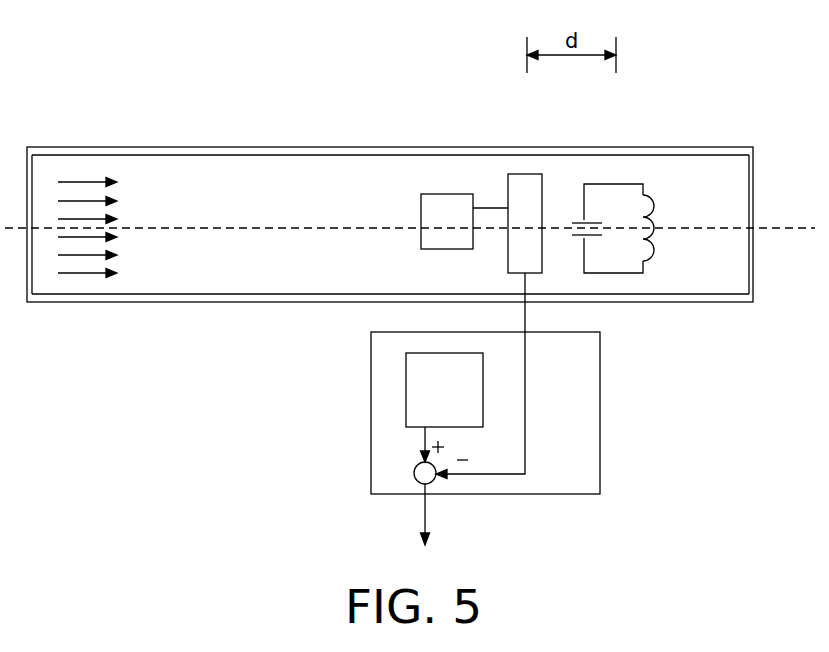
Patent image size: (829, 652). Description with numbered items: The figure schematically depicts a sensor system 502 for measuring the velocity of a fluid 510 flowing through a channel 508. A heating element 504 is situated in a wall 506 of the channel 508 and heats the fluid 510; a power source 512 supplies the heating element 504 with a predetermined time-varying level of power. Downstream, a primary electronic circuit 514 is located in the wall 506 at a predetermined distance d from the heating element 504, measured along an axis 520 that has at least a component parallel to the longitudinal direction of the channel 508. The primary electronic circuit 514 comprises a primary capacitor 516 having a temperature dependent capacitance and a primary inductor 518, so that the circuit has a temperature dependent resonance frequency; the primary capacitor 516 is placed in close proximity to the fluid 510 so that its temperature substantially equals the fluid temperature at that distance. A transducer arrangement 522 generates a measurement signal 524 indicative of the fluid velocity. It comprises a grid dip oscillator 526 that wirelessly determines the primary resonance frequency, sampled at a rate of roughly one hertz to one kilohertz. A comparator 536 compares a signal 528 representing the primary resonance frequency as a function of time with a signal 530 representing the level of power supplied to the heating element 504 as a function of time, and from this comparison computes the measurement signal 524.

The sensor system 502 is at (147, 105).
The heating element 504 is at (525, 174).
The wall 506 is at (240, 302).
The channel 508 is at (676, 147).
The fluid 510 is at (303, 200).
The power source 512 is at (440, 194).
The primary electronic circuit 514 is at (625, 274).
The primary capacitor 516 is at (574, 222).
The primary inductor 518 is at (655, 207).
The axis 520 is at (782, 228).
The transducer arrangement 522 is at (600, 455).
The measurement signal 524 is at (423, 515).
The grid dip oscillator 526 is at (463, 398).
The signal representing the primary resonance frequency 528 is at (423, 445).
The signal representing the level of power 530 is at (525, 380).
The comparator 536 is at (414, 472).